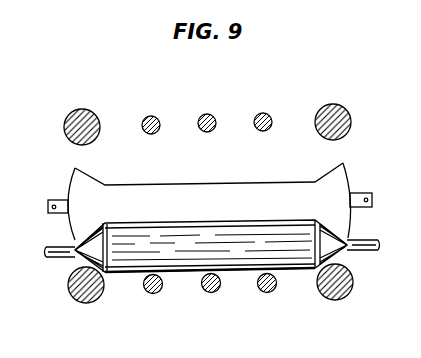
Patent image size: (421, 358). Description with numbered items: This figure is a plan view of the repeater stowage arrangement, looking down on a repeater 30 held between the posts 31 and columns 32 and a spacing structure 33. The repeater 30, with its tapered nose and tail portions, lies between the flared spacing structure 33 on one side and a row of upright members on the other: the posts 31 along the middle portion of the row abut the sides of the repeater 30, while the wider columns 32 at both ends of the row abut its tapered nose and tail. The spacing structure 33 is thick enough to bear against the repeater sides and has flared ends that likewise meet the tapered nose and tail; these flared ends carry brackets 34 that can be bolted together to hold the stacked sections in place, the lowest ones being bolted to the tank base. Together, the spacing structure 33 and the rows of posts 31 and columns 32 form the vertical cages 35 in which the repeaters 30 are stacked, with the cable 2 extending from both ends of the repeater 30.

The cable 2 is at (55, 257).
The repeater 30 is at (184, 247).
The post 31 is at (198, 117).
The column 32 is at (341, 106).
The spacing structure 33 is at (338, 178).
The bracket 34 is at (60, 200).
The vertical cage 35 is at (206, 160).